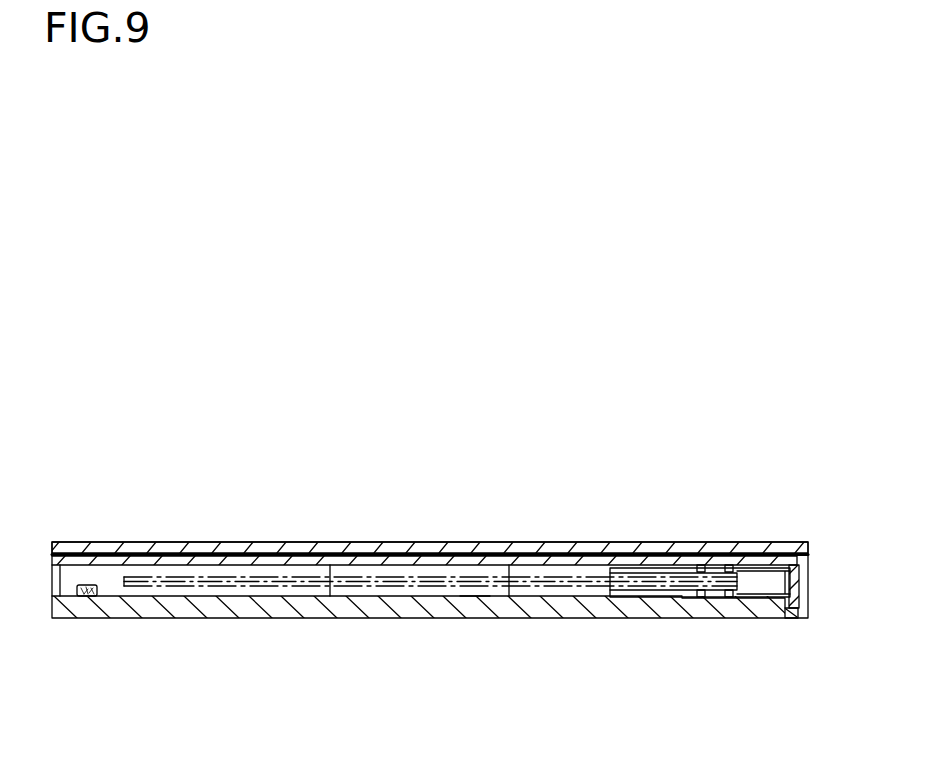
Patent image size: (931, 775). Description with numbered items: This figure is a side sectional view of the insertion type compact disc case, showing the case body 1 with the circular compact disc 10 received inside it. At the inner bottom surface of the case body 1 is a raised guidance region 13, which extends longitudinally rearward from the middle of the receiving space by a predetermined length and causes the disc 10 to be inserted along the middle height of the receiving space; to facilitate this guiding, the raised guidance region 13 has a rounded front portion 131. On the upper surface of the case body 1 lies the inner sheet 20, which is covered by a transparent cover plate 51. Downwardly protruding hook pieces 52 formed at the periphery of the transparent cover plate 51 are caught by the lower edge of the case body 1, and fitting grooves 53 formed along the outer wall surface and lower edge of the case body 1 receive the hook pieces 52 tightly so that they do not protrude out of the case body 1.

The case body 1 is at (497, 626).
The compact disc 10 is at (287, 586).
The raised guidance region 13 is at (610, 597).
The rounded front portion 131 is at (487, 594).
The inner sheet 20 is at (318, 553).
The transparent cover plate 51 is at (423, 548).
The downwardly protruding hook pieces 52 is at (808, 570).
The fitting grooves 53 is at (790, 618).